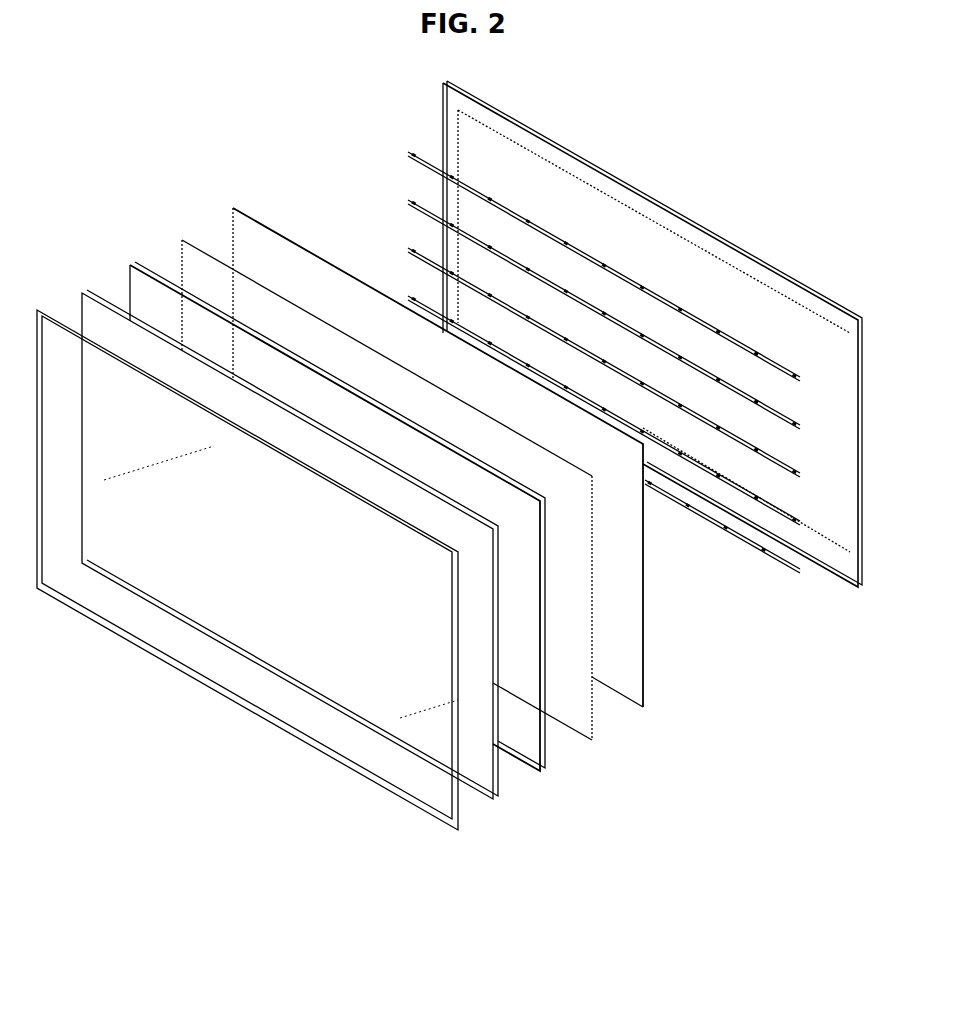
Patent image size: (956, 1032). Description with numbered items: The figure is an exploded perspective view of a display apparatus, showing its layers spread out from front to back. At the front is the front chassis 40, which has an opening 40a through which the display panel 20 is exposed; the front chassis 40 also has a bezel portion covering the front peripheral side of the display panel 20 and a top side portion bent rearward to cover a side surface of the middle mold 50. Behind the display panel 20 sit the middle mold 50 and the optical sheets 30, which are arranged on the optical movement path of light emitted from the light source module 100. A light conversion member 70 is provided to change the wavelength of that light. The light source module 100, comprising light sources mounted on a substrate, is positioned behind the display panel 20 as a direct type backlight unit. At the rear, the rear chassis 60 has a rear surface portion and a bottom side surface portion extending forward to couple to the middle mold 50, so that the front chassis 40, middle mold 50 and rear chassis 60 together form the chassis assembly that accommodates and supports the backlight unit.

The light source module 100 is at (398, 150).
The display panel 20 is at (493, 798).
The optical sheets 30 is at (592, 740).
The front chassis 40 is at (418, 824).
The opening 40a is at (317, 742).
The middle mold 50 is at (562, 780).
The rear chassis 60 is at (665, 208).
The light conversion member 70 is at (660, 710).